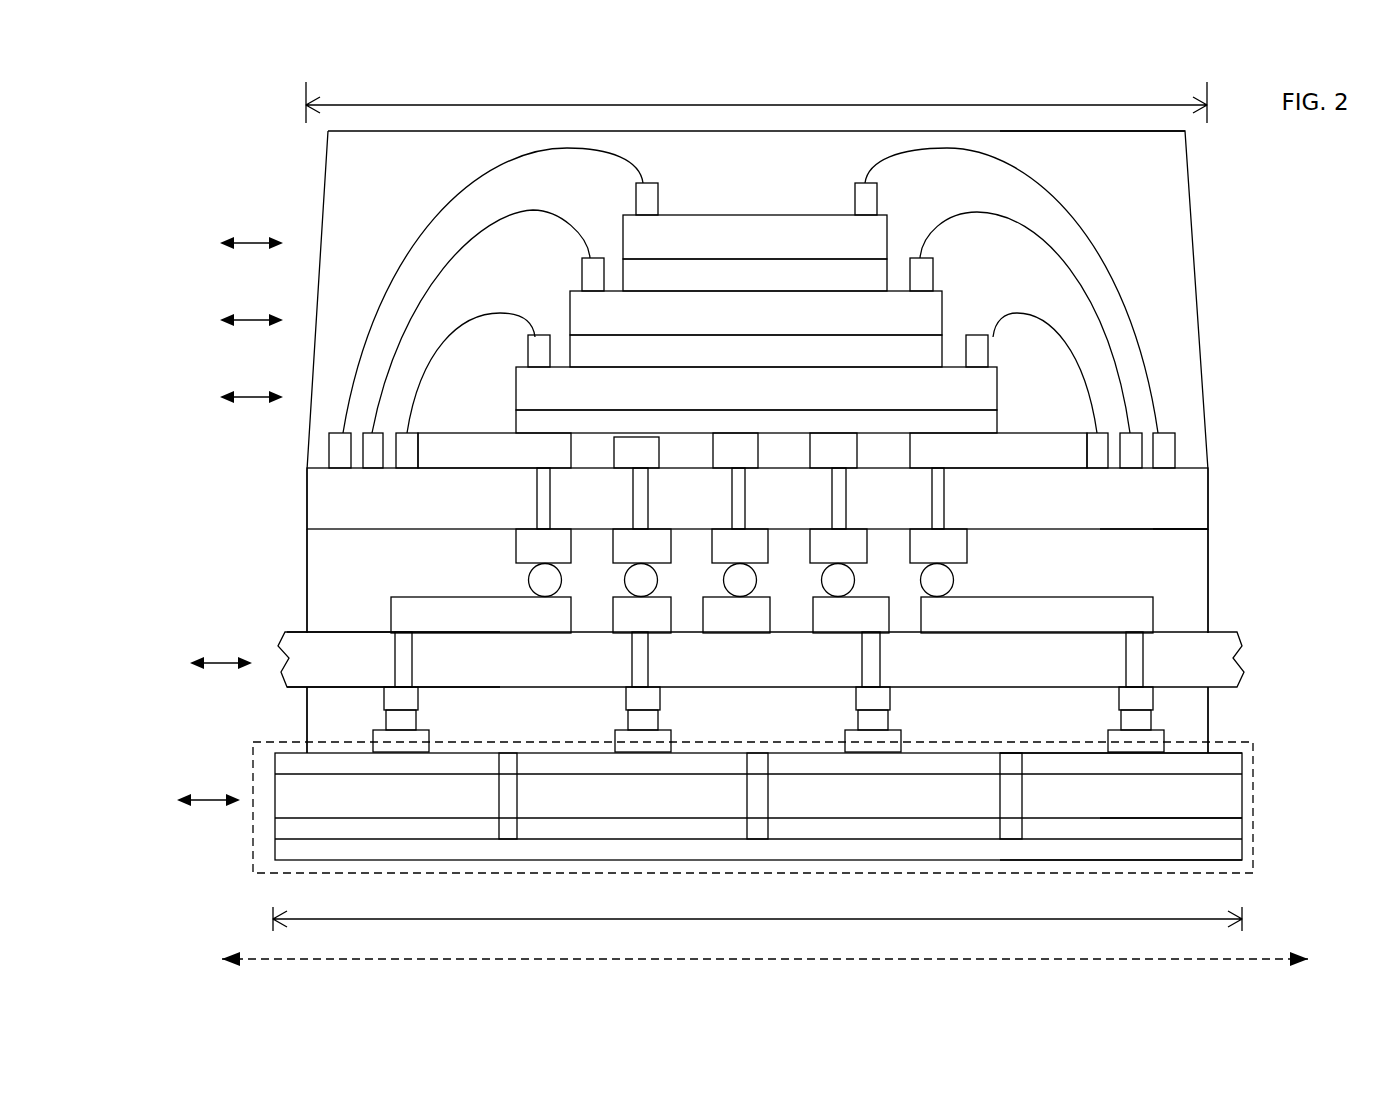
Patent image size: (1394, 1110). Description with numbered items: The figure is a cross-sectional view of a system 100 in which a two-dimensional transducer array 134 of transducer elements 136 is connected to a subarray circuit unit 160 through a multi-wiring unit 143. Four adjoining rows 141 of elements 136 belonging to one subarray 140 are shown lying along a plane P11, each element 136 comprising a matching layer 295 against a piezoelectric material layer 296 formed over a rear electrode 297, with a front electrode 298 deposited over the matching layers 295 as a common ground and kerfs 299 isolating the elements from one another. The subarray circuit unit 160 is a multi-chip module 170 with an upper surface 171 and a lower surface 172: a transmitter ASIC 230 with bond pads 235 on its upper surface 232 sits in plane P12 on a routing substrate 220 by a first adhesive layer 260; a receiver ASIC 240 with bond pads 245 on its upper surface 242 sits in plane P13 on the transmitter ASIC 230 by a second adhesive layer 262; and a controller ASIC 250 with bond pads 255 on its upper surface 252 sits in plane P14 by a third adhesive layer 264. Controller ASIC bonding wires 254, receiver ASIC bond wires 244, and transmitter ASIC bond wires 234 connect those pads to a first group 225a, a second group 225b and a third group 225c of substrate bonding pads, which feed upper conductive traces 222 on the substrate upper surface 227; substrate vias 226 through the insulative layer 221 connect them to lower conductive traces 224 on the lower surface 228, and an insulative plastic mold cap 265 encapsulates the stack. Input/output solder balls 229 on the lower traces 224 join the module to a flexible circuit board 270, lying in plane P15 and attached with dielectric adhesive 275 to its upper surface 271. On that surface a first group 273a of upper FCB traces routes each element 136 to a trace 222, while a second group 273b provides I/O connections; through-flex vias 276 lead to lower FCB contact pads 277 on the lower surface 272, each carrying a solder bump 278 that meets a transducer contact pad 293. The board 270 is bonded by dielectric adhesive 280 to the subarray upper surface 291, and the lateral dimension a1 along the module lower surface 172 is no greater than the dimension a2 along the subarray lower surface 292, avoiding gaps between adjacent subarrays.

The electronic system 100 is at (183, 89).
The two-dimensional linear array 134 is at (940, 958).
The transducer element 136 is at (340, 817).
The subarray 140 is at (252, 862).
The rows 141 is at (412, 835).
The multi-wiring unit 143 is at (1305, 620).
The subarray circuit unit 160 is at (1295, 142).
The multi-chip module 170 is at (316, 162).
The upper surface 171 is at (1090, 131).
The lower surface 172 is at (1153, 530).
The routing substrate 220 is at (1218, 505).
The layer of insulative material 221 is at (670, 514).
The upper conductive traces 222 is at (451, 466).
The lower conductive traces 224 is at (809, 559).
The first group of substrate bonding pads 225a is at (331, 457).
The second group of substrate bonding pads 225b is at (363, 470).
The third group of substrate bonding pads 225c is at (396, 472).
The substrate vias 226 is at (945, 502).
The upper surface 227 is at (1185, 468).
The lower surface 228 is at (1192, 530).
The input/output solder balls 229 is at (535, 578).
The transmitter ASIC 230 is at (712, 402).
The upper surface 232 is at (743, 367).
The transmitter ASIC bond wires 234 is at (1060, 335).
The transmitter ASIC bond pads 235 is at (965, 352).
The receiver ASIC 240 is at (593, 326).
The upper surface 242 is at (703, 291).
The receiver ASIC bond wires 244 is at (1065, 278).
The receiver ASIC bond pads 245 is at (908, 280).
The controller ASIC 250 is at (637, 251).
The upper surface 252 is at (678, 213).
The controller ASIC bonding wires 254 is at (1055, 205).
The controller ASIC bond pads 255 is at (857, 183).
The first adhesive layer 260 is at (758, 439).
The second adhesive layer 262 is at (627, 362).
The third adhesive layer 264 is at (627, 286).
The insulative plastic mold cap 265 is at (353, 174).
The flexible circuit board 270 is at (330, 664).
The upper surface 271 is at (328, 632).
The lower surface 272 is at (290, 690).
The first group of upper FCB traces 273a is at (823, 626).
The second group of upper FCB traces 273b is at (707, 624).
The dielectric adhesive 275 is at (352, 559).
The through-flex vias 276 is at (1143, 662).
The lower FCB contact pads 277 is at (1132, 691).
The solder bump 278 is at (1136, 718).
The dielectric adhesive 280 is at (990, 726).
The upper surface 291 is at (1223, 752).
The lower surface 292 is at (1190, 863).
The transducer contact pad 293 is at (397, 738).
The matching layer 295 is at (1218, 832).
The piezoelectric material layer 296 is at (1218, 797).
The rear electrode 297 is at (1218, 765).
The front electrode 298 is at (1218, 850).
The kerfs 299 is at (757, 840).
The plane P11 is at (213, 800).
The second plane P12 is at (258, 397).
The third plane P13 is at (258, 320).
The fourth plane P14 is at (258, 243).
The fifth plane P15 is at (222, 663).
The lateral dimension a1 is at (756, 101).
The lateral dimension a2 is at (757, 932).